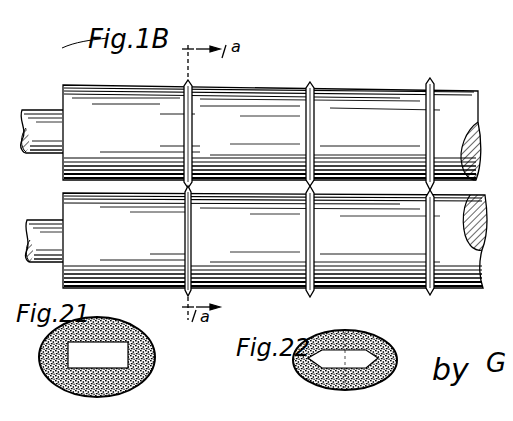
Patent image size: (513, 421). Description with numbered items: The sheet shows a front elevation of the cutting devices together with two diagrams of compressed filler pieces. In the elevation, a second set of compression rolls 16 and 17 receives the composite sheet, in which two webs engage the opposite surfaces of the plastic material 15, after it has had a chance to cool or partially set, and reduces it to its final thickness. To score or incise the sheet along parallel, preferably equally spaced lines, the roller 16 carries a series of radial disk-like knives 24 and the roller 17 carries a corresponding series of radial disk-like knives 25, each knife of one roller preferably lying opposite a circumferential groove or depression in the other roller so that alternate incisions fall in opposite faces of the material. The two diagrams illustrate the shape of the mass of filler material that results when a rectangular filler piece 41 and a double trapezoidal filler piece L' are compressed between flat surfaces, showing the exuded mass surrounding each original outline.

In FIG. 1B, the plastic material 15 is at (265, 125).
In FIG. 1B, the compression roll 16 is at (378, 96).
In FIG. 1B, the radial disk-like knives 24 is at (432, 84).
In FIG. 1B, the compression roll 17 is at (378, 277).
In FIG. 1B, the radial disk-like knives 25 is at (306, 293).
In FIG. 21, the rectangular filler piece 41 is at (97, 357).
In FIG. 22, the double trapezoidal filler piece L' is at (352, 357).